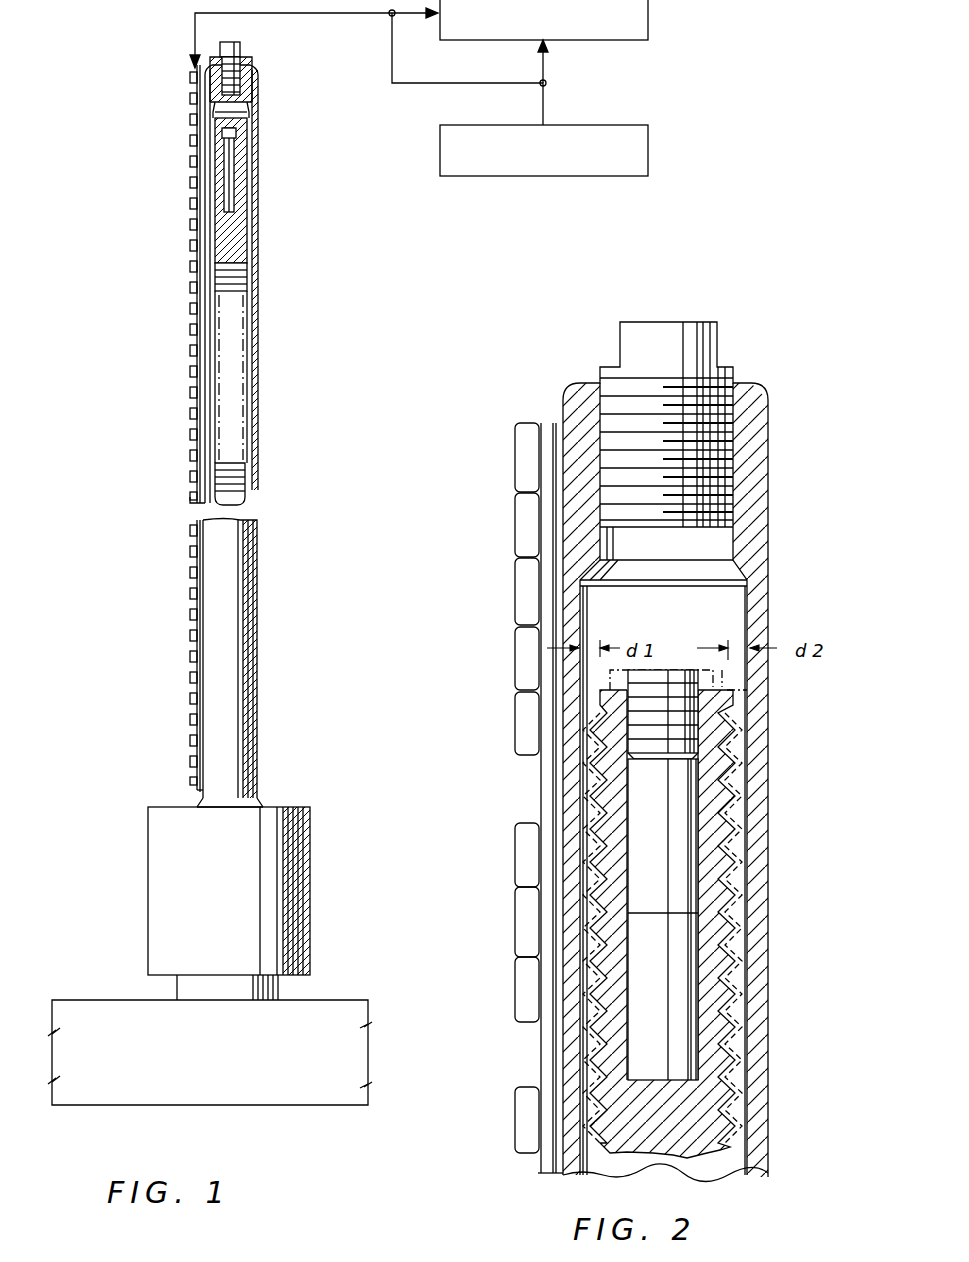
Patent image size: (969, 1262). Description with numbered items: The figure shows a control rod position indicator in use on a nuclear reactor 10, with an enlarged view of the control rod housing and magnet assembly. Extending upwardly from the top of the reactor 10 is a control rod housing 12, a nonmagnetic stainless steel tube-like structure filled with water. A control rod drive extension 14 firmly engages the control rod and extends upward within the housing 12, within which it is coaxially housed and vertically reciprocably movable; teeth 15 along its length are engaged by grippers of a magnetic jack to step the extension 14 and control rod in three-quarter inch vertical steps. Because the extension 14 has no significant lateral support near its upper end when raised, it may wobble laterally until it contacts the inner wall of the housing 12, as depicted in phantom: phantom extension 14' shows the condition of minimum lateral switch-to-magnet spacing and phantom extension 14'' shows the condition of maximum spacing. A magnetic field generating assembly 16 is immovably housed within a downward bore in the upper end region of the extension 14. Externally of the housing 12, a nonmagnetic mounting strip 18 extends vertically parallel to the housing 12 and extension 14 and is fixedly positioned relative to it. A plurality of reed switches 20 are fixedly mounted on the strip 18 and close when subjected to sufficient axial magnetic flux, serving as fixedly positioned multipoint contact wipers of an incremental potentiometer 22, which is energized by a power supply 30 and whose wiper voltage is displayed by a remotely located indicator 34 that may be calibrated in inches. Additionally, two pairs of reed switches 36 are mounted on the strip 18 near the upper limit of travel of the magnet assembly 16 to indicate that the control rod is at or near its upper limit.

In FIG. 1, the nuclear reactor 10 is at (94, 1005).
In FIG. 1, the control rod housing 12 is at (257, 250).
In FIG. 2, the control rod housing 12 is at (762, 1000).
In FIG. 1, the control rod drive extension 14 is at (263, 203).
In FIG. 2, the control rod drive extension 14 is at (703, 924).
In FIG. 2, the phantom extension 14' is at (520, 760).
In FIG. 2, the phantom extension 14'' is at (783, 758).
In FIG. 1, the teeth 15 is at (250, 277).
In FIG. 1, the magnetic field generating assembly 16 is at (240, 180).
In FIG. 2, the magnetic field generating assembly 16 is at (706, 913).
In FIG. 1, the mounting strip 18 is at (191, 118).
In FIG. 1, the reed switches 20 is at (190, 316).
In FIG. 2, the reed switches 20 is at (515, 430).
In FIG. 1, the incremental potentiometer 22 is at (177, 215).
In FIG. 1, the power supply 30 is at (648, 140).
In FIG. 1, the indicator 34 is at (648, 22).
In FIG. 2, the reed switches 36 is at (515, 510).